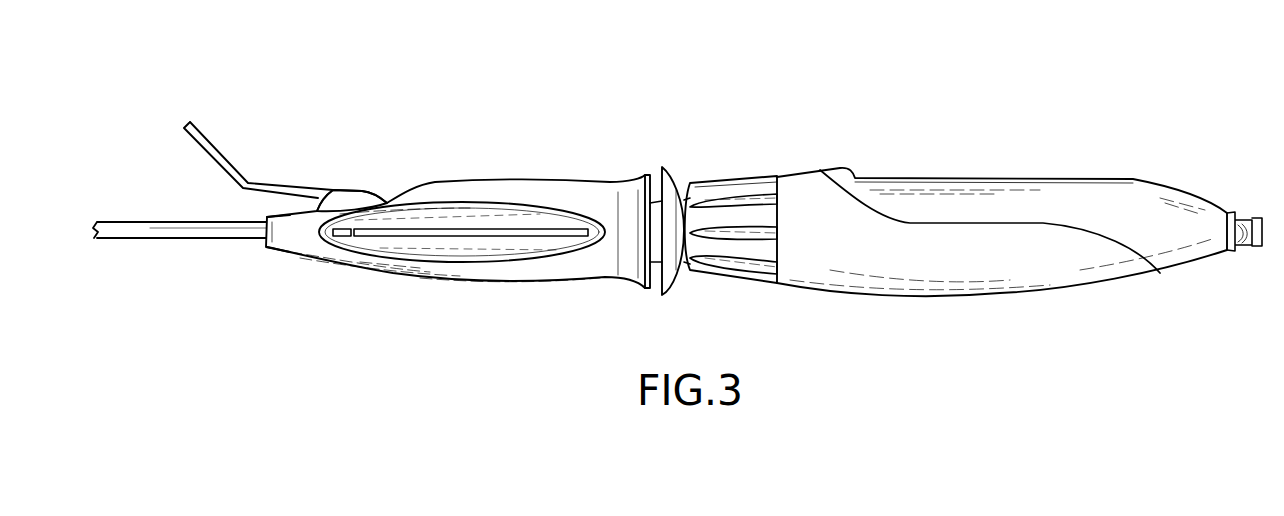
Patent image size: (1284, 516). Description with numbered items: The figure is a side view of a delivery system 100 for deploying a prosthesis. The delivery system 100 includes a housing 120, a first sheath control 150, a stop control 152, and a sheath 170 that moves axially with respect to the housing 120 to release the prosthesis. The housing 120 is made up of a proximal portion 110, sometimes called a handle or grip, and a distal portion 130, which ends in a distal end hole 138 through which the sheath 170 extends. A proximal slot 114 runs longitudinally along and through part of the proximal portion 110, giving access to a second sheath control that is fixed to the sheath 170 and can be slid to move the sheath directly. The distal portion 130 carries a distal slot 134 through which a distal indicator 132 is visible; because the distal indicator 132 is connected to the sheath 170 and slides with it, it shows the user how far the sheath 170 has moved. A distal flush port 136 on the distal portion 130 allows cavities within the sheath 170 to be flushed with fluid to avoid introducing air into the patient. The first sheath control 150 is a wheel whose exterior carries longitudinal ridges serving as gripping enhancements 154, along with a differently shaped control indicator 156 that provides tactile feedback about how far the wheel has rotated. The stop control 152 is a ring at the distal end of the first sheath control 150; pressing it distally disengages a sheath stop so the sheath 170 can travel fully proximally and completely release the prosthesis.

The delivery system 100 is at (403, 104).
The proximal portion 110 is at (1000, 289).
The proximal slot 114 is at (983, 180).
The housing 120 is at (863, 312).
The distal portion 130 is at (515, 263).
The distal indicator 132 is at (346, 237).
The distal slot 134 is at (441, 237).
The distal flush port 136 is at (333, 197).
The distal end hole 138 is at (265, 244).
The first sheath control 150 is at (761, 288).
The stop control 152 is at (680, 292).
The gripping enhancements 154 is at (738, 232).
The control indicator 156 is at (712, 182).
The sheath 170 is at (118, 225).